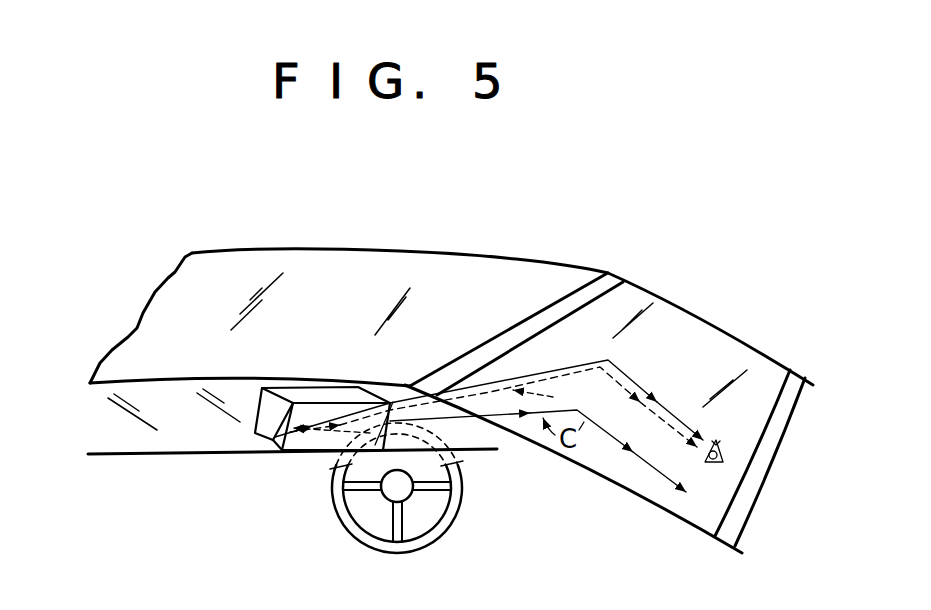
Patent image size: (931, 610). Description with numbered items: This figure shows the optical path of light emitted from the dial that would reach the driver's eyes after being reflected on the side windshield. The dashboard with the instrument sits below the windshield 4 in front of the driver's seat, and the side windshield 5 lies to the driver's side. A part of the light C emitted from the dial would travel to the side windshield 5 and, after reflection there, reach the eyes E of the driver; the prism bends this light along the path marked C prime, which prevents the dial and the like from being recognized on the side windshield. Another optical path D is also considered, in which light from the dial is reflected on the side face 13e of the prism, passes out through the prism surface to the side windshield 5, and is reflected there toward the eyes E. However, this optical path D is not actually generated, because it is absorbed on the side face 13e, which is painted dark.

The windshield 4 is at (513, 278).
The side windshield 5 is at (688, 333).
The side face 13e is at (280, 440).
The optical path D is at (493, 381).
The light C is at (545, 393).
The eyes E is at (722, 440).